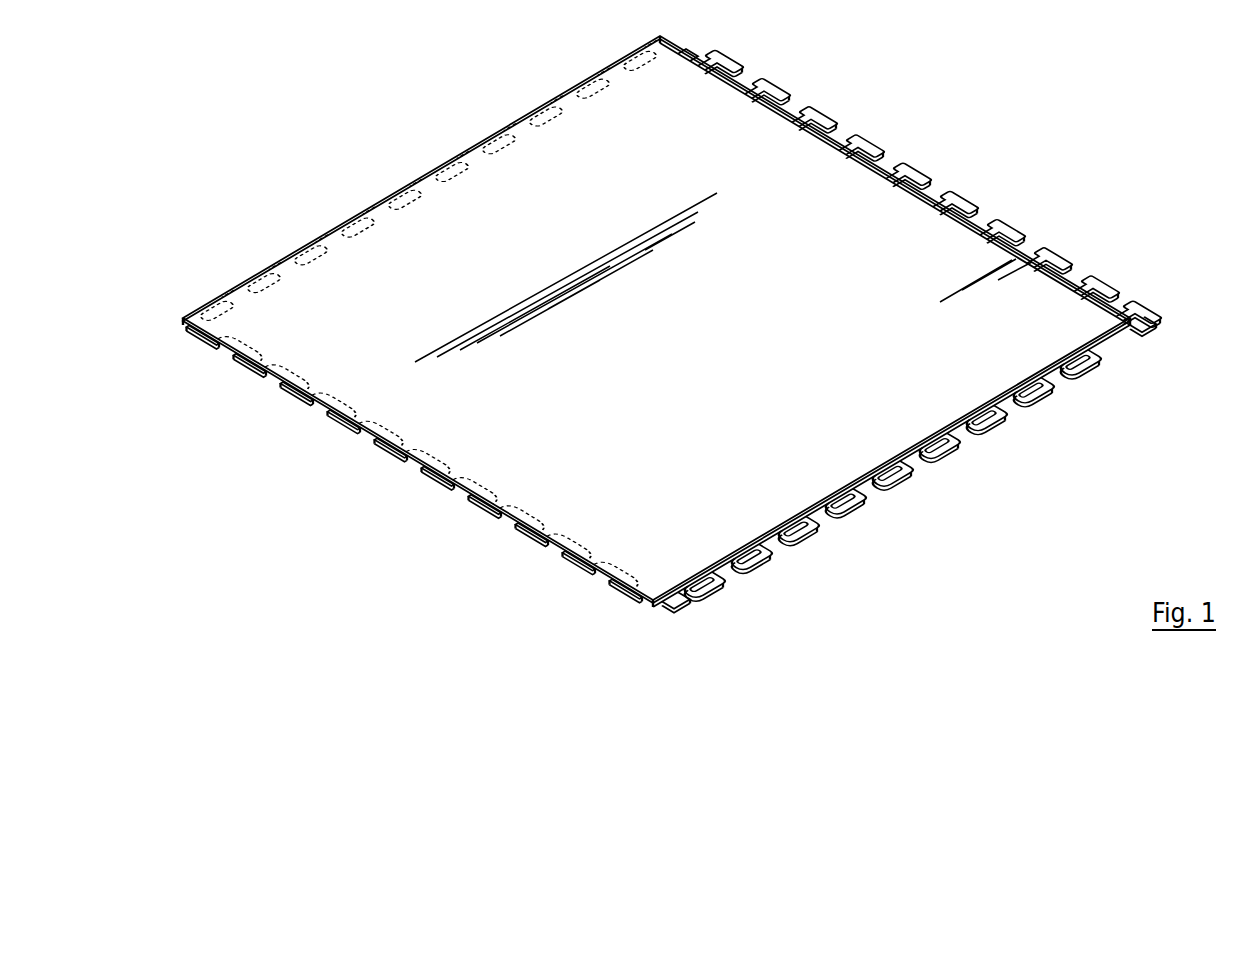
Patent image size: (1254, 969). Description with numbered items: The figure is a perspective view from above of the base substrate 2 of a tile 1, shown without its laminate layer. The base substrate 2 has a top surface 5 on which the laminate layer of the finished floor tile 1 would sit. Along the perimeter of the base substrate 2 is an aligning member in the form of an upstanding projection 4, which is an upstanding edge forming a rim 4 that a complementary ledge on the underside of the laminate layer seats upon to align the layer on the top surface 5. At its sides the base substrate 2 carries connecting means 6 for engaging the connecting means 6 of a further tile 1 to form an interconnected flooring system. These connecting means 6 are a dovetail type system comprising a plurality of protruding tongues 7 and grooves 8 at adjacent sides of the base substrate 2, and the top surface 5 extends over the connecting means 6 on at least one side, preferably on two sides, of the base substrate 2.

The tile 1 is at (827, 51).
The base substrate 2 is at (533, 192).
The upstanding projection 4 is at (975, 224).
The top surface 5 is at (762, 301).
The connecting means 6 is at (1063, 412).
The protruding tongue 7 is at (1000, 425).
The groove 8 is at (957, 445).